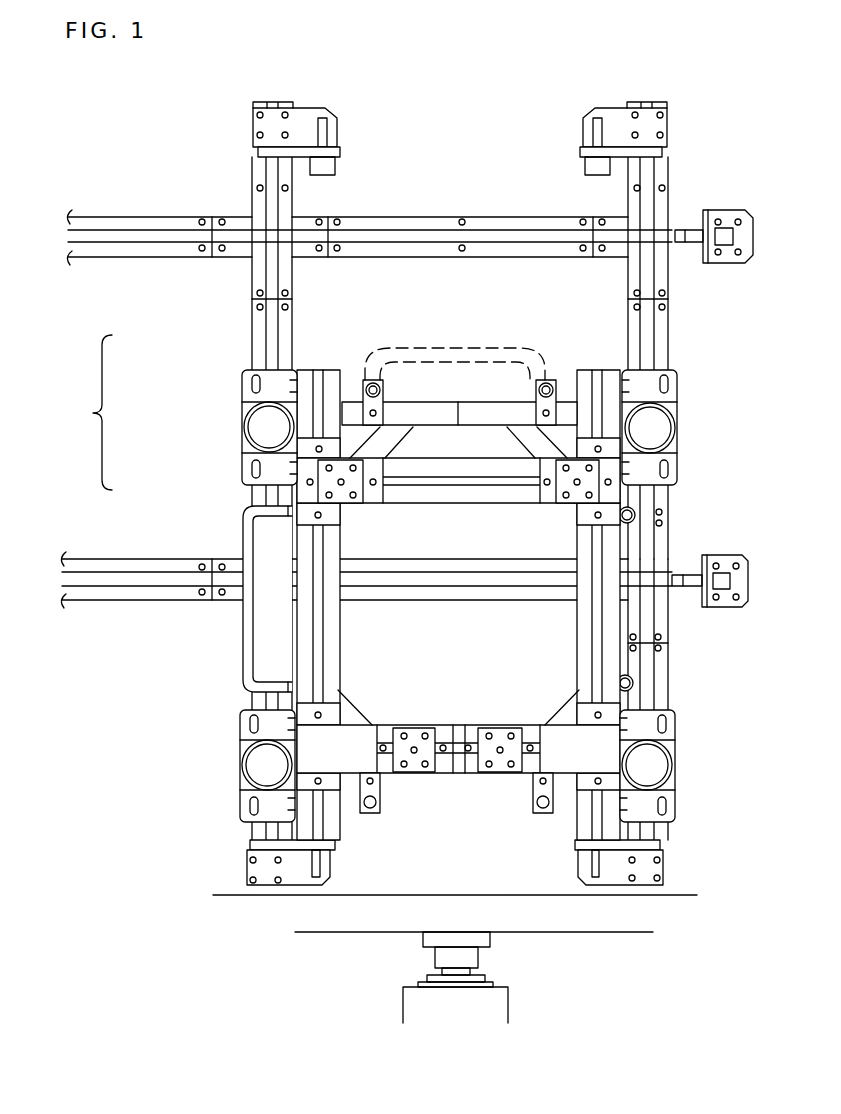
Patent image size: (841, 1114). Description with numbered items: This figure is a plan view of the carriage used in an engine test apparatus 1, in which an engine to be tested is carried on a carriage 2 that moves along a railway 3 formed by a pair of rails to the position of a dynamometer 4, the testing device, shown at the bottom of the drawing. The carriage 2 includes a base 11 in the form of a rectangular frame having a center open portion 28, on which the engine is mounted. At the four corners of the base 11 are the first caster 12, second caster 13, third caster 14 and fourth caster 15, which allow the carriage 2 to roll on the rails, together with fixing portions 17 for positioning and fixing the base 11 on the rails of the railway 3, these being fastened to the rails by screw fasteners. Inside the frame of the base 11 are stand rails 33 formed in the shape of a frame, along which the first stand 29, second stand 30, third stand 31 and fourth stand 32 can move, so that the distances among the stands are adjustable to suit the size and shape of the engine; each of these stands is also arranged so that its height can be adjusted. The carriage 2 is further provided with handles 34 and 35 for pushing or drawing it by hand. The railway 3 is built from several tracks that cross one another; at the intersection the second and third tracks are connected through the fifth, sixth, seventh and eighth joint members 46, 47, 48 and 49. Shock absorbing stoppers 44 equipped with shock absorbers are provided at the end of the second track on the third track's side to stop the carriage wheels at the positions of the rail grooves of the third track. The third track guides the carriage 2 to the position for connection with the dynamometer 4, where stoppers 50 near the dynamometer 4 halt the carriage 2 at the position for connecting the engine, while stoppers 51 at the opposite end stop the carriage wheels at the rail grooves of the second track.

The engine test apparatus 1 is at (93, 412).
The carriage 2 is at (222, 432).
The railway 3 is at (257, 276).
The dynamometer 4 is at (392, 997).
The base 11 is at (420, 392).
The first caster 12 is at (660, 768).
The second caster 13 is at (660, 428).
The third caster 14 is at (252, 768).
The fourth caster 15 is at (250, 412).
The fixing portion 17 is at (258, 803).
The center open portion 28 is at (442, 637).
The first stand 29 is at (420, 774).
The second stand 30 is at (500, 774).
The third stand 31 is at (350, 462).
The fourth stand 32 is at (575, 462).
The stand rails 33 is at (340, 540).
The handle 34 is at (243, 540).
The handle 35 is at (483, 348).
The shock absorbing stoppers 44 is at (725, 222).
The fifth joint member 46 is at (252, 500).
The sixth joint member 47 is at (660, 615).
The seventh joint member 48 is at (672, 220).
The eighth joint member 49 is at (252, 214).
The stoppers 50 is at (252, 870).
The stoppers 51 is at (305, 118).